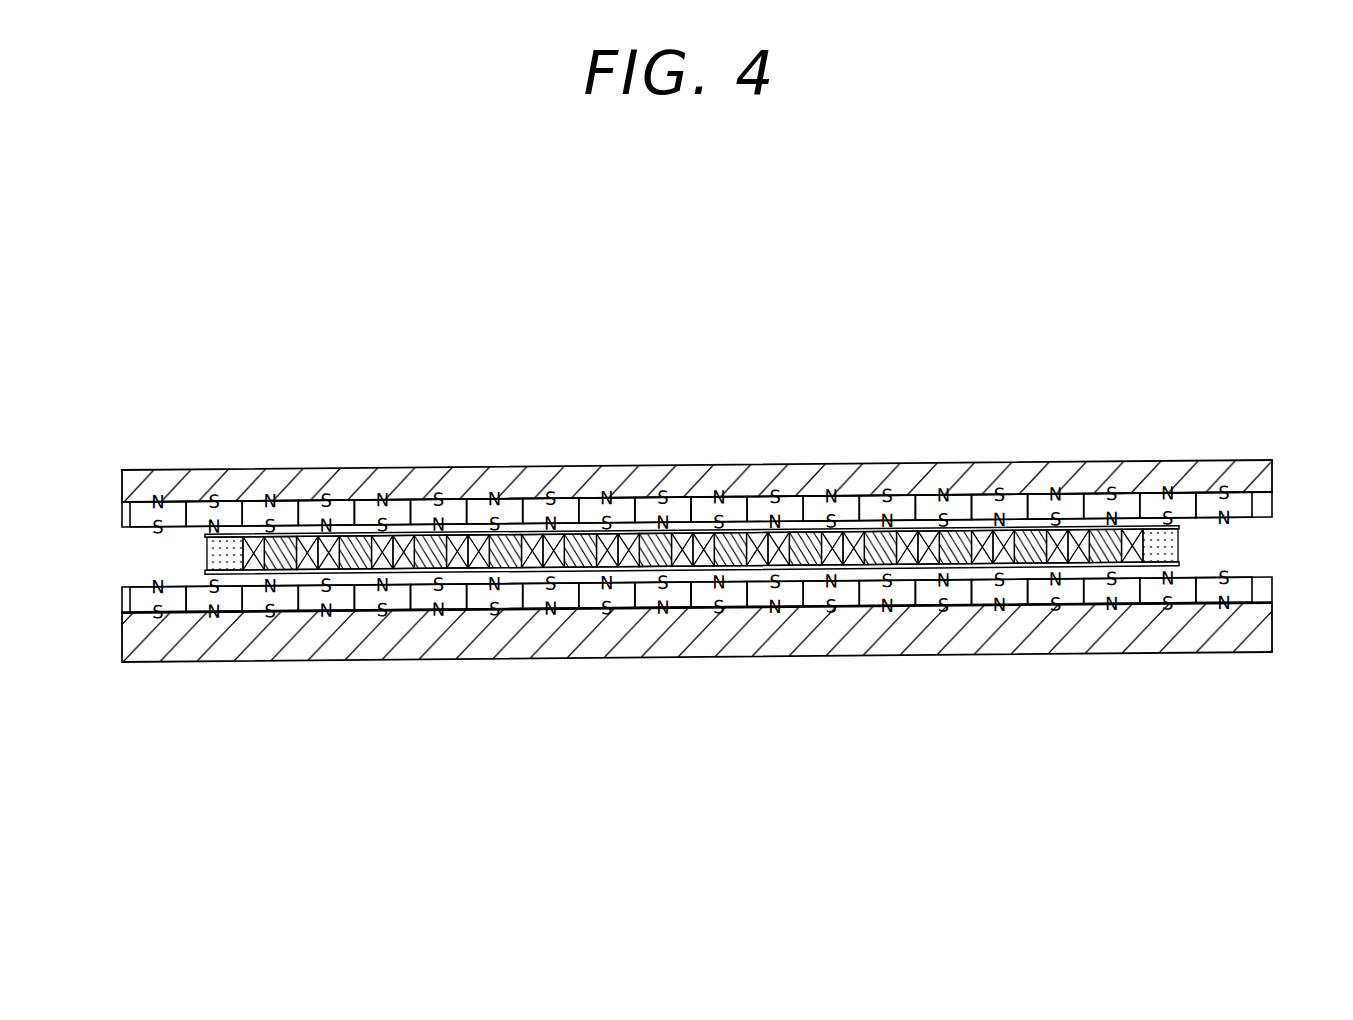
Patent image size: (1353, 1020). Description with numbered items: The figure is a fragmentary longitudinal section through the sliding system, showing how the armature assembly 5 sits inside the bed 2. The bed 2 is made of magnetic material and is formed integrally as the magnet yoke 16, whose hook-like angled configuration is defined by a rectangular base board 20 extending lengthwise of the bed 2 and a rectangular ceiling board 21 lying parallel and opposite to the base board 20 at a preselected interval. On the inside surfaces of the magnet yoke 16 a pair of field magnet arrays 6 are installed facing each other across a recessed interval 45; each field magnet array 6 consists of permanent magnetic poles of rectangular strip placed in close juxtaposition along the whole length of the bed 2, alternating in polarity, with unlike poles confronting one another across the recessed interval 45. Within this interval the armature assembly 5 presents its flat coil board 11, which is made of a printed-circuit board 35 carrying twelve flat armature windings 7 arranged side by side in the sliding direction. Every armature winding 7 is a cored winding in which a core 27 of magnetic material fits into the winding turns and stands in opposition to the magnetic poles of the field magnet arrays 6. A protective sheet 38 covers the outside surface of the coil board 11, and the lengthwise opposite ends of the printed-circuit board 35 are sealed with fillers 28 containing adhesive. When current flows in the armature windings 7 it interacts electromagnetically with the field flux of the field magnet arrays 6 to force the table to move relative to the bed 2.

The bed 2 is at (315, 468).
The armature assembly 5 is at (652, 530).
The field magnet array 6 is at (588, 507).
The armature winding 7 is at (777, 543).
The coil board 11 is at (647, 586).
The magnet yoke 16 is at (1013, 473).
The base board 20 is at (452, 645).
The ceiling board 21 is at (430, 477).
The core 27 is at (427, 543).
The filler 28 is at (229, 548).
The printed-circuit board 35 is at (797, 573).
The protective sheet 38 is at (703, 540).
The recessed interval 45 is at (173, 557).